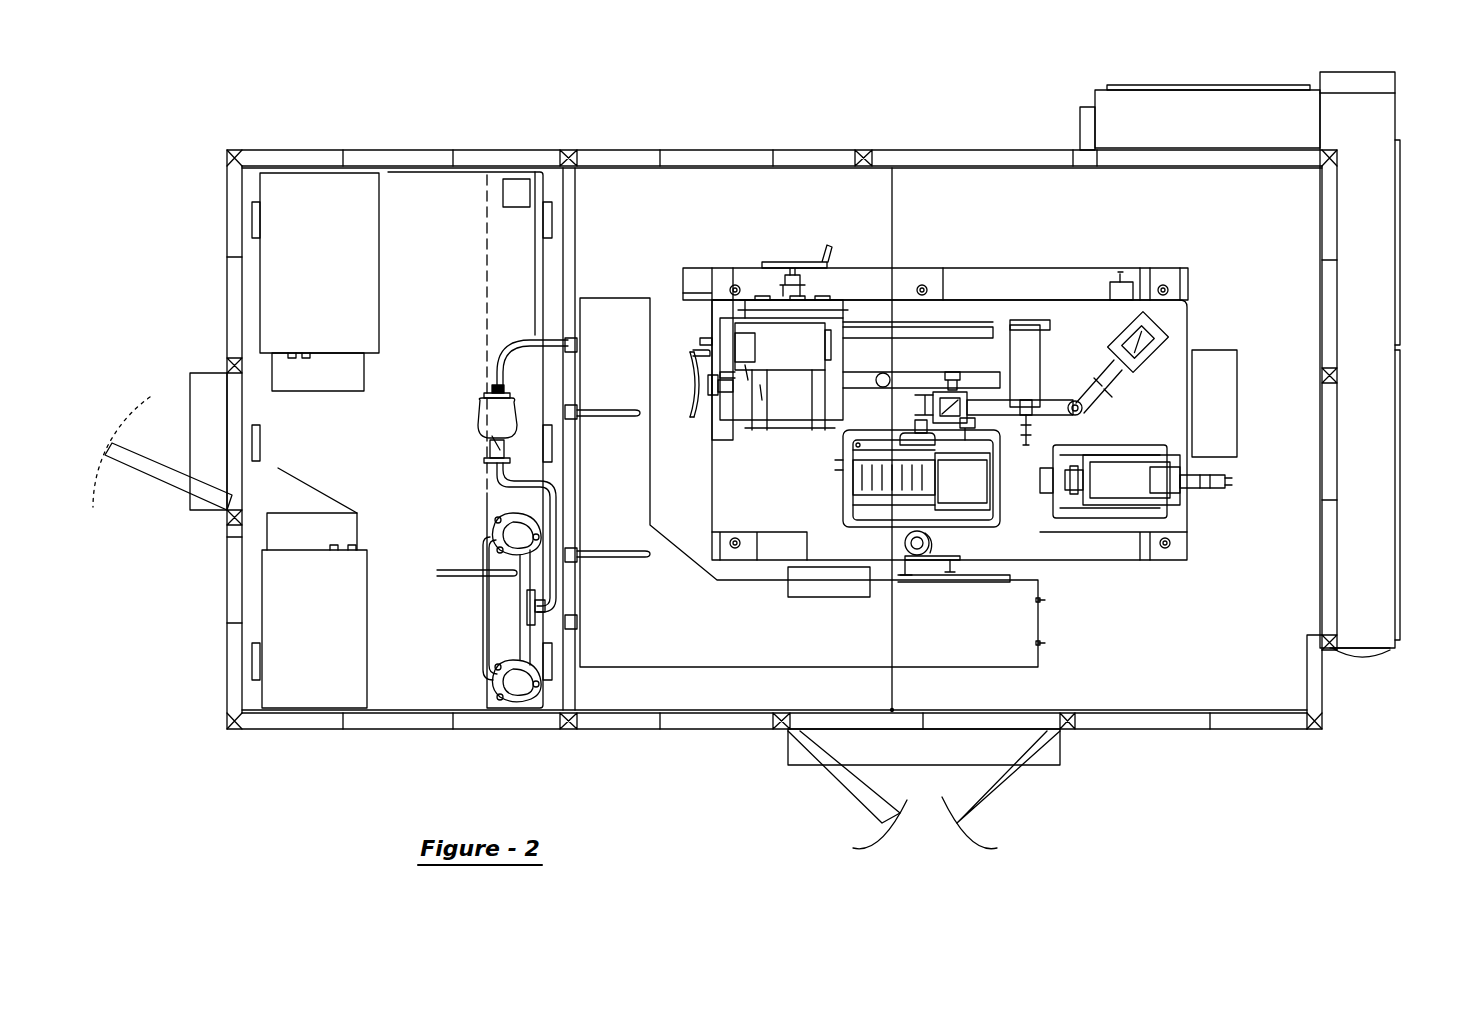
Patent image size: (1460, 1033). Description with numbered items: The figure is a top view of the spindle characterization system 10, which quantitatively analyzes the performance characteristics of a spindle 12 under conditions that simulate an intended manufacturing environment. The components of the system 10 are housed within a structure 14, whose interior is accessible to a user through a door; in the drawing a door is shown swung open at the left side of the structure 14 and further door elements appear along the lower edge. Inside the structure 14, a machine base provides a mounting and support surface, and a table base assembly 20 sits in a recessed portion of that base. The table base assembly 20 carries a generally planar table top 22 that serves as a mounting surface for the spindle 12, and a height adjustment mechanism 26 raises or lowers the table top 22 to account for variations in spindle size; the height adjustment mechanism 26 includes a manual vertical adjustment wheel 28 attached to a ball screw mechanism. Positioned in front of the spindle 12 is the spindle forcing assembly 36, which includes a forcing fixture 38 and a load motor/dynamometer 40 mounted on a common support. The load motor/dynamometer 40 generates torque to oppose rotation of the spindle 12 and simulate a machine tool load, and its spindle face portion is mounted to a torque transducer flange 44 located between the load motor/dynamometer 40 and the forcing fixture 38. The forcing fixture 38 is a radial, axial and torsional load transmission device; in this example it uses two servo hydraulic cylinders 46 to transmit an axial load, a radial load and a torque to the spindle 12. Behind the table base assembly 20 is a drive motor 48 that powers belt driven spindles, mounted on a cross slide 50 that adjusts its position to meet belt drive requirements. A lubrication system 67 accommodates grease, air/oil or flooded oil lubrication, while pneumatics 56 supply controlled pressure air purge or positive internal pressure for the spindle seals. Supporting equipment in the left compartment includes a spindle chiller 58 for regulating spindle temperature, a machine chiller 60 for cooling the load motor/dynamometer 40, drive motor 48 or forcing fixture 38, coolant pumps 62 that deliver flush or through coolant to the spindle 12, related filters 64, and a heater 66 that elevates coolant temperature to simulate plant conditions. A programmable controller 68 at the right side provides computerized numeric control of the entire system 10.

The spindle characterization system 10 is at (803, 122).
The spindle 12 is at (970, 500).
The structure 14 is at (962, 158).
The table base assembly 20 is at (1040, 573).
The table top 22 is at (845, 525).
The height adjustment mechanism 26 is at (900, 560).
The manual vertical adjustment wheel 28 is at (930, 560).
The spindle forcing assembly 36 is at (1110, 445).
The forcing fixture 38 is at (1060, 500).
The load motor/dynamometer 40 is at (1140, 448).
The torque transducer flange 44 is at (1083, 480).
The servo hydraulic cylinders 46 is at (1028, 418).
The drive motor 48 is at (825, 322).
The cross slide 50 is at (740, 418).
The pneumatics 56 is at (515, 178).
The spindle chiller 58 is at (367, 630).
The machine chiller 60 is at (379, 270).
The coolant pumps 62 is at (478, 415).
The filters 64 is at (493, 523).
The heater 66 is at (610, 560).
The lubrication system 67 is at (1110, 283).
The programmable controller 68 is at (1400, 262).